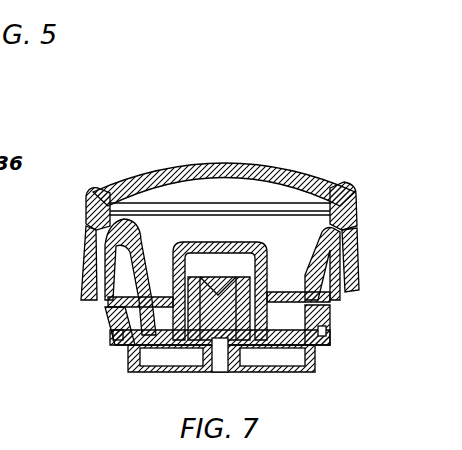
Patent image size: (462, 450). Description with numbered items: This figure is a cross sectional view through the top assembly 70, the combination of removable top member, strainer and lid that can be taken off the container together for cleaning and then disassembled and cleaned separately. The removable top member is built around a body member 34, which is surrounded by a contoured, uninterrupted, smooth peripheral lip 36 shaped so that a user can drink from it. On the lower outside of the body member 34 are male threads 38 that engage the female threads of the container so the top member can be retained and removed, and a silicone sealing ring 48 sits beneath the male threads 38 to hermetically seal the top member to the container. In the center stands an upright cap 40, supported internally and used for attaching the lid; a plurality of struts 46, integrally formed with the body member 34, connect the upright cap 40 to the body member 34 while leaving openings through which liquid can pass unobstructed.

The top assembly 70 is at (243, 148).
The upright cap 40 is at (200, 255).
The peripheral lip 36 is at (95, 270).
The male threads 38 is at (357, 284).
The body member 34 is at (112, 312).
The struts 46 is at (200, 335).
The sealing ring 48 is at (318, 336).